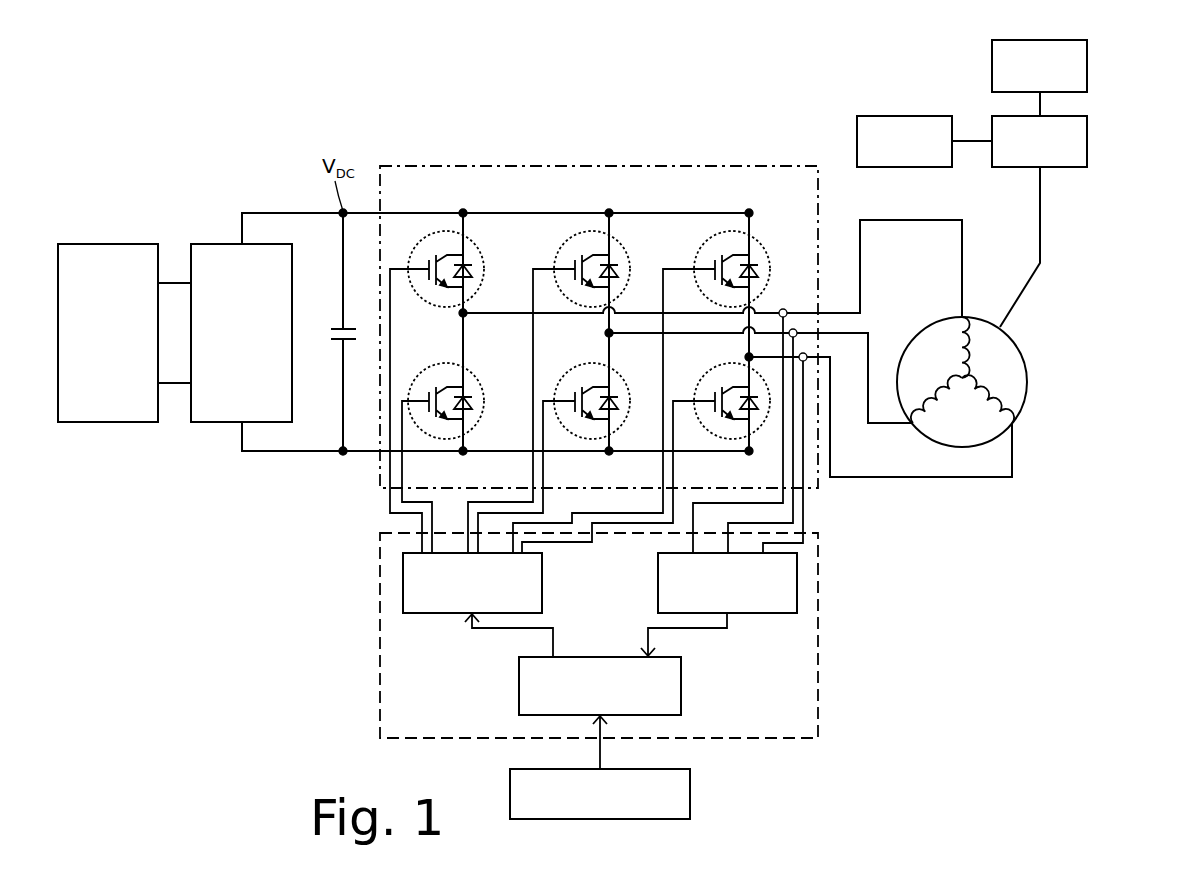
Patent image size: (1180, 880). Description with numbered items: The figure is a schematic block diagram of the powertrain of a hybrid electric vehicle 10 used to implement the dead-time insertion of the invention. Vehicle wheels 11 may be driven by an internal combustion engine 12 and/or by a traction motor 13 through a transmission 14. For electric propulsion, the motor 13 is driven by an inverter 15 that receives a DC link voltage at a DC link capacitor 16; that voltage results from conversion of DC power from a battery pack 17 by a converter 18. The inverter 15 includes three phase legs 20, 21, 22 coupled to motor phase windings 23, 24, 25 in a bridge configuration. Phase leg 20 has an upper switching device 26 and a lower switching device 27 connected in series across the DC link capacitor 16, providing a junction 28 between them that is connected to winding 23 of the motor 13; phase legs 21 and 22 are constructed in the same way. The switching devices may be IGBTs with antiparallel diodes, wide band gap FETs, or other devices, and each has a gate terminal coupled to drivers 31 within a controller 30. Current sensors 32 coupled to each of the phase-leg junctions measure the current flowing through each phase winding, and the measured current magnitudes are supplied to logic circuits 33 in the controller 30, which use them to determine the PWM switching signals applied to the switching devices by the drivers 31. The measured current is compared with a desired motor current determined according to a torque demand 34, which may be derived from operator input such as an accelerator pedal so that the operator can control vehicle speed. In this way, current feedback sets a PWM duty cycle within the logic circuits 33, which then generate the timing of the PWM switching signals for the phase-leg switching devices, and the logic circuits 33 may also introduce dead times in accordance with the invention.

The hybrid electric vehicle 10 is at (205, 106).
The vehicle wheels 11 is at (913, 114).
The internal combustion engine 12 is at (1087, 63).
The traction motor 13 is at (917, 333).
The transmission 14 is at (1087, 143).
The inverter 15 is at (668, 165).
The DC link capacitor 16 is at (335, 325).
The battery pack 17 is at (108, 243).
The converter 18 is at (215, 243).
The phase leg 20 is at (470, 199).
The phase leg 21 is at (616, 199).
The phase leg 22 is at (756, 199).
The motor phase winding 23 is at (970, 330).
The motor phase winding 24 is at (922, 405).
The motor phase winding 25 is at (1003, 407).
The upper switching device 26 is at (480, 248).
The lower switching device 27 is at (473, 373).
The junction 28 is at (463, 313).
The controller 30 is at (380, 620).
The drivers 31 is at (542, 581).
The current sensors 32 is at (763, 614).
The logic circuits 33 is at (519, 684).
The torque demand 34 is at (690, 794).